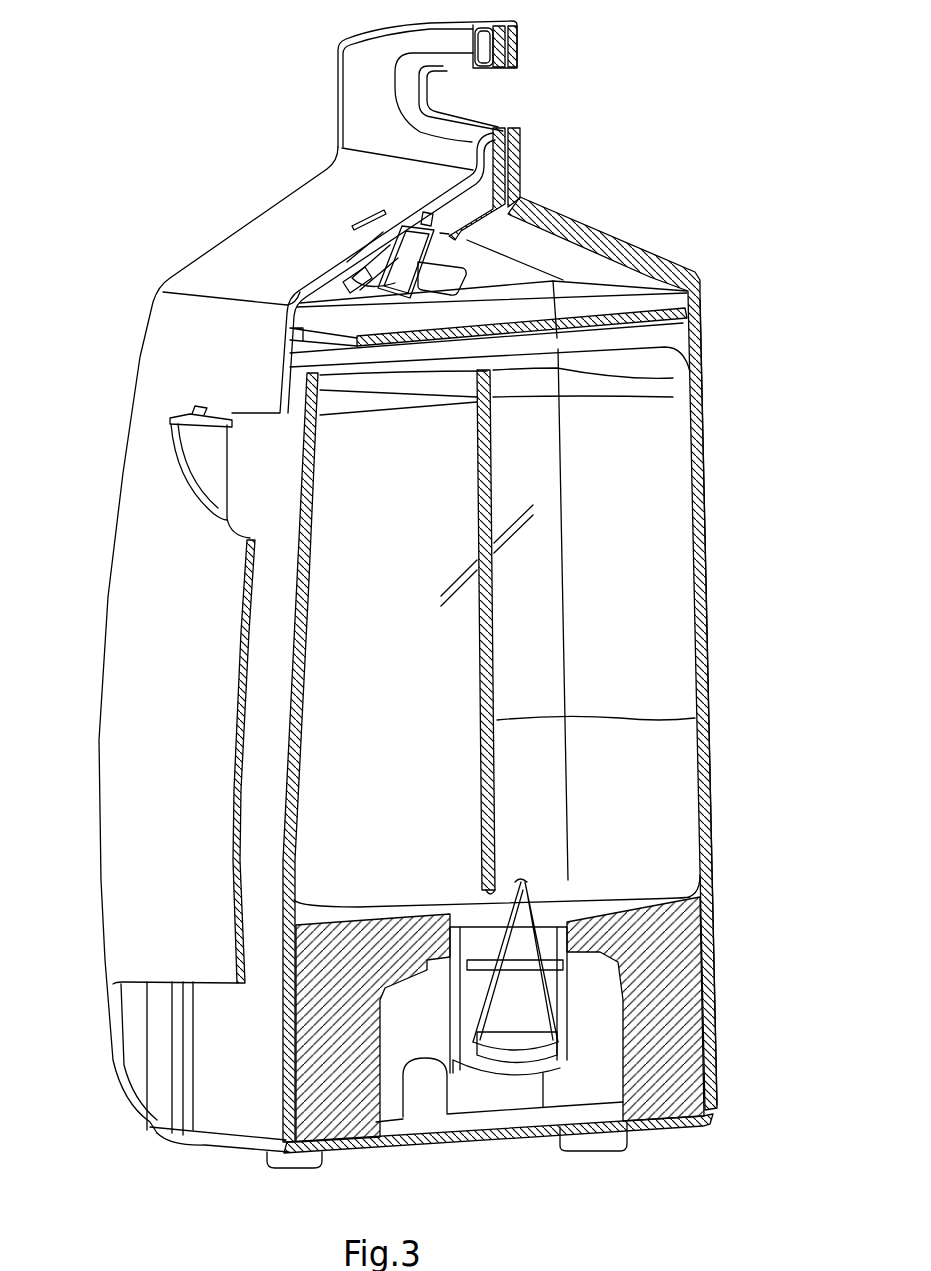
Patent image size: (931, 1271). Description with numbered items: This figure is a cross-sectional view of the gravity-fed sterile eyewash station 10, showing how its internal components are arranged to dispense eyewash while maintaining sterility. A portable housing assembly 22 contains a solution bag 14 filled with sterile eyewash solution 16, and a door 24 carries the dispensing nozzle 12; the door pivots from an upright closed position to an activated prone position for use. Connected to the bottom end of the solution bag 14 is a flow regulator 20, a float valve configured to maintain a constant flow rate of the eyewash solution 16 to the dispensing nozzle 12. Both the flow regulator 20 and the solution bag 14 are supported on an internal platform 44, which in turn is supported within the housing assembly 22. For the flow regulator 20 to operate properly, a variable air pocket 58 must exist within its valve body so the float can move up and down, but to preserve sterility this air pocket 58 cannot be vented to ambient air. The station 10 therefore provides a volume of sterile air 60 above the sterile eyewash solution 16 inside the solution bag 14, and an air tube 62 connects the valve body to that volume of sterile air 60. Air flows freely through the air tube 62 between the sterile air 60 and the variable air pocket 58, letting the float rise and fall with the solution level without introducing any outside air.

The eyewash station 10 is at (236, 185).
The dispensing nozzle 12 is at (455, 264).
The solution bag 14 is at (672, 347).
The sterile eyewash solution 16 is at (620, 640).
The flow regulator 20 is at (443, 1060).
The housing assembly 22 is at (700, 360).
The door 24 is at (135, 350).
The internal platform 44 is at (710, 1082).
The variable air pocket 58 is at (550, 997).
The volume of sterile air 60 is at (618, 392).
The air tube 62 is at (707, 718).